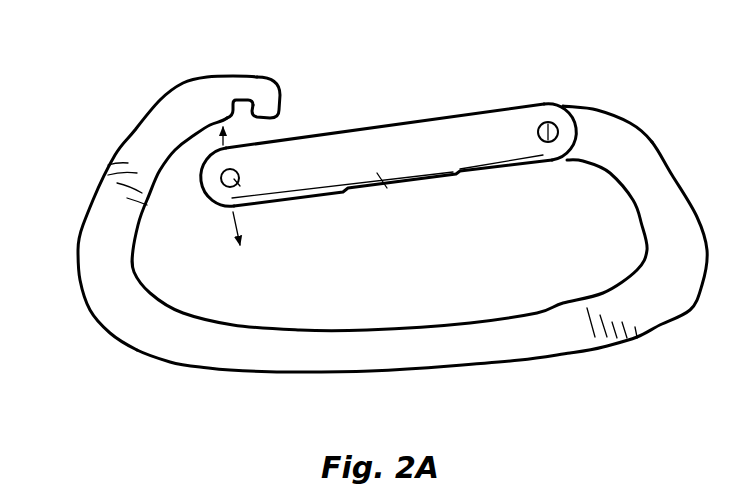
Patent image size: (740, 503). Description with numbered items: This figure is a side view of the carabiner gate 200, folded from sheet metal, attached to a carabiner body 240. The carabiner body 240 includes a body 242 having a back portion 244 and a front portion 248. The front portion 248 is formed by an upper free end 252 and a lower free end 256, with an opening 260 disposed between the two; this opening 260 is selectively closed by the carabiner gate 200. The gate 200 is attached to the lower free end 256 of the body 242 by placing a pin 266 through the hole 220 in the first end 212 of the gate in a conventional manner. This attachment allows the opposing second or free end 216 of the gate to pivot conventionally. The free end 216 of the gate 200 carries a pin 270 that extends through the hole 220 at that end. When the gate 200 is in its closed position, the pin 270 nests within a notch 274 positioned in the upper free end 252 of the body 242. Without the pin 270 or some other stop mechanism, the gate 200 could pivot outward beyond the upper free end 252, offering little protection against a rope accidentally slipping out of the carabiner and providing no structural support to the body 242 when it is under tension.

The carabiner gate 200 is at (405, 163).
The first end of the gate 212 is at (580, 130).
The second or free end of the gate 216 is at (207, 183).
The hole 220 is at (234, 179).
The carabiner body 240 is at (204, 384).
The body 242 is at (535, 338).
The back portion 244 is at (390, 370).
The front portion 248 is at (430, 70).
The upper free end 252 is at (250, 72).
The lower free end 256 is at (582, 103).
The opening 260 is at (328, 76).
The pin 266 is at (548, 122).
The pin 270 is at (240, 186).
The notch 274 is at (232, 100).